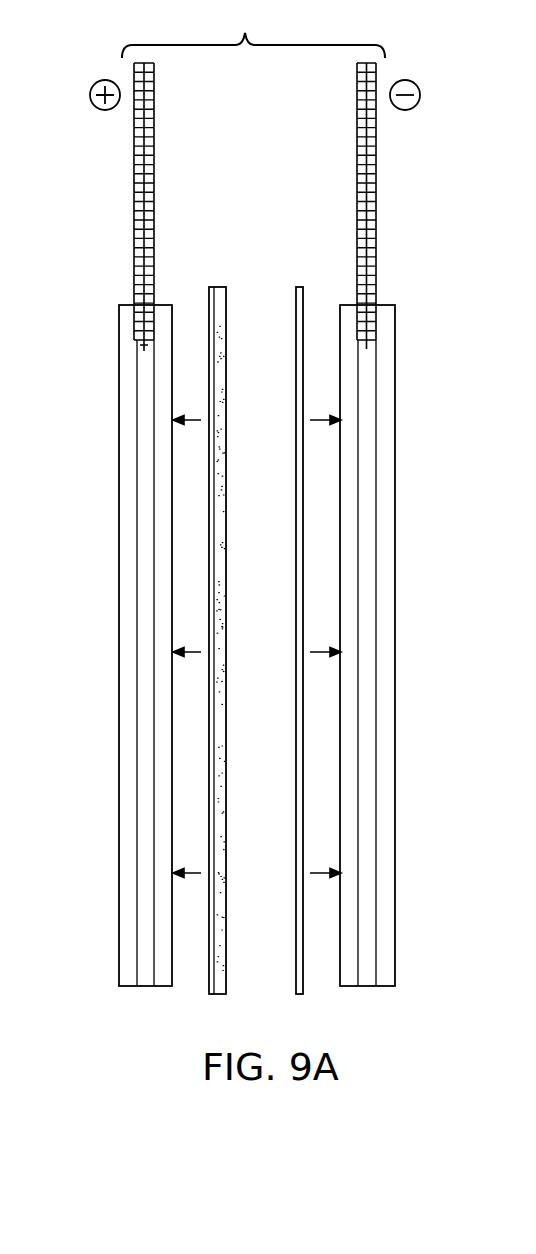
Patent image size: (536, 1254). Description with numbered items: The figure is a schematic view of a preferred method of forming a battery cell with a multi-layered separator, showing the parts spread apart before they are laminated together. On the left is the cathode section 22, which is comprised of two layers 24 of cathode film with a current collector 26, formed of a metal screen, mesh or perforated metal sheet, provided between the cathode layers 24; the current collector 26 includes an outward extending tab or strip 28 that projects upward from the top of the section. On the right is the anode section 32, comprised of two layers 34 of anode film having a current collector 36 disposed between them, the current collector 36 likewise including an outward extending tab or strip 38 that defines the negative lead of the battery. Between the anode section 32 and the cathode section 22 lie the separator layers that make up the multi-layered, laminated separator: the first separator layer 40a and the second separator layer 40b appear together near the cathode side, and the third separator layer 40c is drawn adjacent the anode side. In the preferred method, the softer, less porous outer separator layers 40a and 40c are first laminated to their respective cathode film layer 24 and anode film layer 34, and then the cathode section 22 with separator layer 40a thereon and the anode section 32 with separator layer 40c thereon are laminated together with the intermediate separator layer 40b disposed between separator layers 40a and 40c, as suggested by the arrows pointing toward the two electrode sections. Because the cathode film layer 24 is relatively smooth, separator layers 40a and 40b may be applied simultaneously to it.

The cathode section 22 is at (118, 288).
The cathode layer 24 is at (165, 528).
The current collector 26 is at (148, 582).
The tab or strip 28 is at (140, 162).
The anode section 32 is at (383, 300).
The anode layer 34 is at (382, 513).
The current collector 36 is at (368, 600).
The tab or strip 38 is at (368, 160).
The first separator layer 40a is at (213, 287).
The second separator layer 40b is at (219, 287).
The third separator layer 40c is at (299, 287).